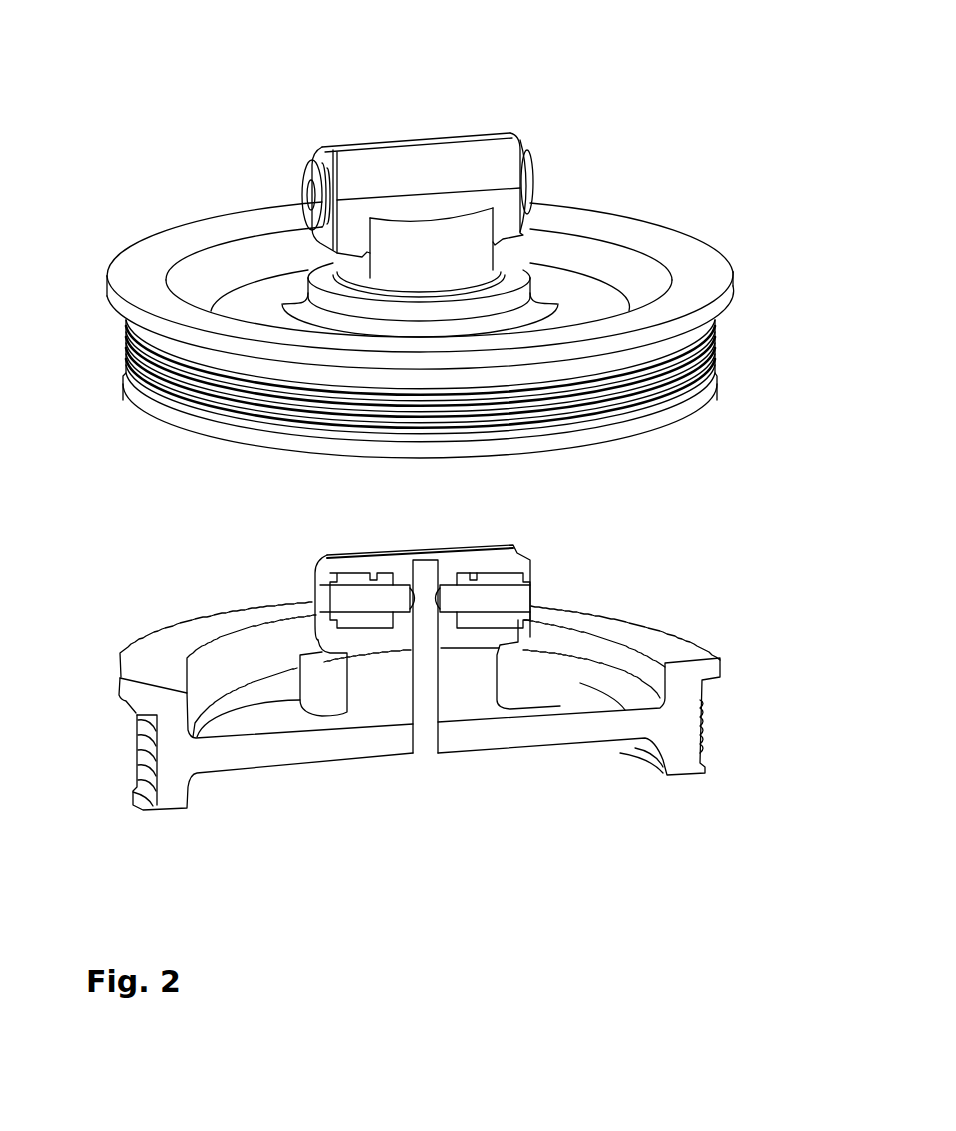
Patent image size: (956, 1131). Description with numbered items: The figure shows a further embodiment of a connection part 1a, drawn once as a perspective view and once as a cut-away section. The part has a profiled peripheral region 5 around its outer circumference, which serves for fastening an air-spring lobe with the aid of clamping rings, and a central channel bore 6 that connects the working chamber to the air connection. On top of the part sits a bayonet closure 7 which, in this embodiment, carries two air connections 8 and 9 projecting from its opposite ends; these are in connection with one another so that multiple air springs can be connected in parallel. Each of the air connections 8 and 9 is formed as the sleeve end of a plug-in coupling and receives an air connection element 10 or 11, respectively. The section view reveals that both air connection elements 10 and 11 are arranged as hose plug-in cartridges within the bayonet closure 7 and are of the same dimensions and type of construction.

The connection part 1a is at (409, 366).
The profiled peripheral region 5 is at (112, 339).
The channel bore 6 is at (429, 695).
The bayonet closure 7 is at (512, 217).
The air connection 8 is at (296, 181).
The air connection 9 is at (545, 161).
The air connection element 10 is at (355, 600).
The air connection element 11 is at (488, 587).